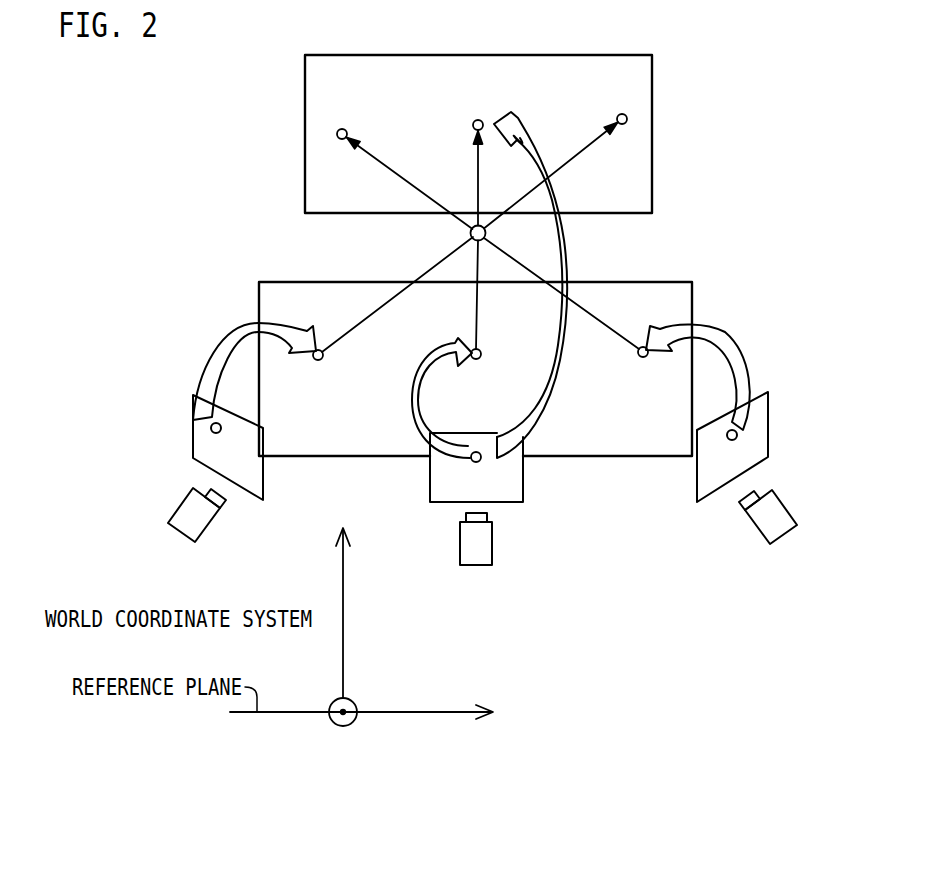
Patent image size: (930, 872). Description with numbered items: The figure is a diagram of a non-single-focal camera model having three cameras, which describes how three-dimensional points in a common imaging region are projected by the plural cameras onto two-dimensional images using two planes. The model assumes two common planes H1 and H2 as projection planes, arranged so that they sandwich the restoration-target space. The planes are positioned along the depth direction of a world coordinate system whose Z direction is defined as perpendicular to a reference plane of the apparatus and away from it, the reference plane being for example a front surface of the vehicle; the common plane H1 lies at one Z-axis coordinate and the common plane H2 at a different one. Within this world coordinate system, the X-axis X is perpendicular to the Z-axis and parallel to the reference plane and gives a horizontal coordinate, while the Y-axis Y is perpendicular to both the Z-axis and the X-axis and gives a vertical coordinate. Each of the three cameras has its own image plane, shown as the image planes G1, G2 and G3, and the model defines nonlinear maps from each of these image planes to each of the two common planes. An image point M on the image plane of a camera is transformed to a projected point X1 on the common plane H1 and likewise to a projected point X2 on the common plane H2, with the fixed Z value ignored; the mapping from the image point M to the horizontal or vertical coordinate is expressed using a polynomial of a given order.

The common plane H1 is at (668, 293).
The common plane H2 is at (616, 70).
The projected point X1 is at (483, 354).
The projected point X2 is at (472, 125).
The image point M is at (470, 462).
The image plane G1 is at (250, 477).
The image plane G2 is at (512, 487).
The image plane G3 is at (710, 477).
The X-axis X is at (460, 718).
The Y-axis Y is at (352, 702).
The Z direction Z is at (349, 618).